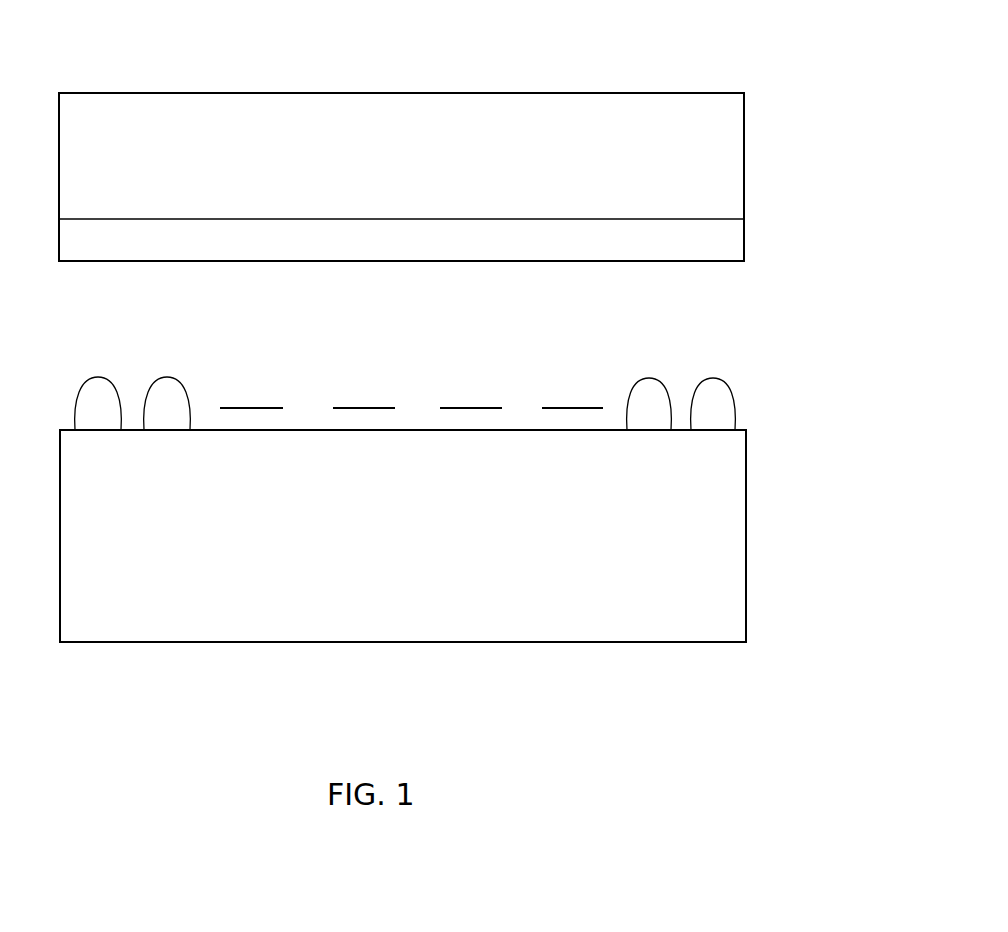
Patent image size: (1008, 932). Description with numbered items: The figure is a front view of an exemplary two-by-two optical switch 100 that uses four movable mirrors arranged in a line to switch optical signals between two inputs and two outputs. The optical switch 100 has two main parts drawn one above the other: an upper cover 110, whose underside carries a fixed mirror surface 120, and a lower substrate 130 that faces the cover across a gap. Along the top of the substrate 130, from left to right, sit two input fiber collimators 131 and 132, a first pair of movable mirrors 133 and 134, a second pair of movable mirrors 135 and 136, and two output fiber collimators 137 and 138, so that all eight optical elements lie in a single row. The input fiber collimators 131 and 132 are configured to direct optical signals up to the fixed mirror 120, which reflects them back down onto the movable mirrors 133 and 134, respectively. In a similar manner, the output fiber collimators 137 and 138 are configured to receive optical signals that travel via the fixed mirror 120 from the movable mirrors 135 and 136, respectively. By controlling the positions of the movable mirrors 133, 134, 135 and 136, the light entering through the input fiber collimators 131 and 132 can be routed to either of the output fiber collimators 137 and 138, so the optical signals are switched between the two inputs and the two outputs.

The optical switch 100 is at (549, 809).
The cover 110 is at (755, 145).
The fixed mirror surface 120 is at (750, 250).
The substrate 130 is at (755, 525).
The input fiber collimator 131 is at (98, 425).
The input fiber collimator 132 is at (167, 425).
The movable mirror 133 is at (251, 440).
The movable mirror 134 is at (364, 440).
The movable mirror 135 is at (471, 440).
The movable mirror 136 is at (572, 440).
The output fiber collimator 137 is at (650, 425).
The output fiber collimator 138 is at (713, 425).